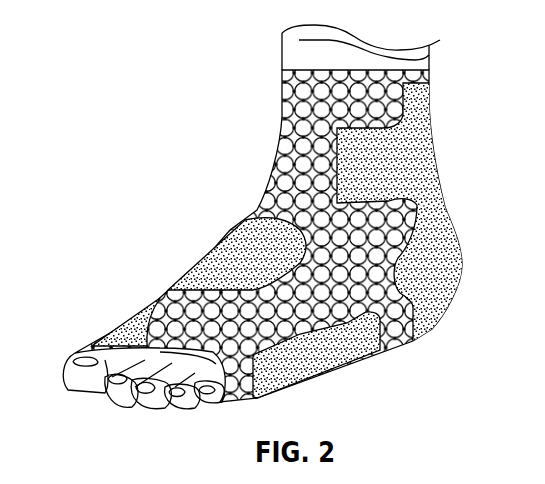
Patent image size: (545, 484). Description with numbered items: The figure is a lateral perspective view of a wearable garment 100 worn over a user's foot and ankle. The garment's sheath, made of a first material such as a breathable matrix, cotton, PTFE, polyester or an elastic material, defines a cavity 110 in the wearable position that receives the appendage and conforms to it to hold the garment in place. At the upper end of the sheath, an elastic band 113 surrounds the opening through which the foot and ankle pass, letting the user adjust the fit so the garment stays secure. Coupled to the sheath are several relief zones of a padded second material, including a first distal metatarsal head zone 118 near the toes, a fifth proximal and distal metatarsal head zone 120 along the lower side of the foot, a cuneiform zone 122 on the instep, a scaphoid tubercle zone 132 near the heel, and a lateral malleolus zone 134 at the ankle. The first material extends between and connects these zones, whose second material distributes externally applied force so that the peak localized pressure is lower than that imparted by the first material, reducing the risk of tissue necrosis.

The wearable garment 100 is at (218, 67).
The cavity 110 is at (268, 277).
The elastic band 113 is at (298, 52).
The first distal metatarsal head zone 118 is at (145, 320).
The fifth proximal and distal metatarsal head zone 120 is at (305, 374).
The cuneiform zone 122 is at (226, 241).
The scaphoid tubercle zone 132 is at (420, 270).
The lateral malleolus zone 134 is at (372, 165).